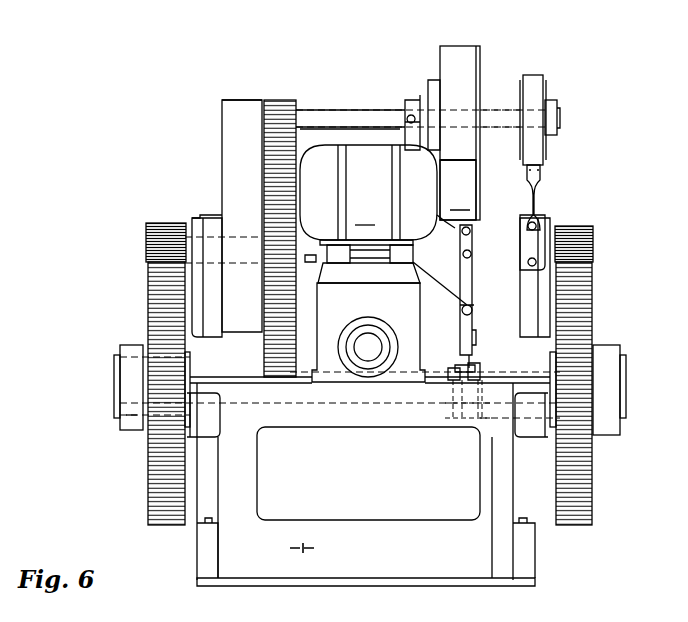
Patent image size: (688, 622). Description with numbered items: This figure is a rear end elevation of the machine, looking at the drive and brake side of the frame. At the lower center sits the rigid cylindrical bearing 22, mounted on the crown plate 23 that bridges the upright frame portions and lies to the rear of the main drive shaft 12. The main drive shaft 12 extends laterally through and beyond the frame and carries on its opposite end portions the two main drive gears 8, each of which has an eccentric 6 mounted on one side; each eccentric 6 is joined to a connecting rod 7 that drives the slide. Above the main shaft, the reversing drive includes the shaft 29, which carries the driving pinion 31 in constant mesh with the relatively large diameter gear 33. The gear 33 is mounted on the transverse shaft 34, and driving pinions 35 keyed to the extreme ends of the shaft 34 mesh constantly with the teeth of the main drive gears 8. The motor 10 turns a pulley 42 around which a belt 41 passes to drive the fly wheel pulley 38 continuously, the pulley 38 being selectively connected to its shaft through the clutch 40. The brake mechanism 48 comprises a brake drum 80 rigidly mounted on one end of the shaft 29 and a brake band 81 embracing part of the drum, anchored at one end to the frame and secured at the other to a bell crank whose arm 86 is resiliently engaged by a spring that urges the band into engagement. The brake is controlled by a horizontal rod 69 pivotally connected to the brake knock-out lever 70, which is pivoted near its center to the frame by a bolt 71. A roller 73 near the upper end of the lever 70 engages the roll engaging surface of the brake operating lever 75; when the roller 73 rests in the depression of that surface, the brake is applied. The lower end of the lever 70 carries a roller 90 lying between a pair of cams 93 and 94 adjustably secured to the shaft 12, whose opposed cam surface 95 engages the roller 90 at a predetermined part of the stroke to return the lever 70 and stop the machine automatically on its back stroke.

The eccentric 6 is at (114, 392).
The connecting rod 7 is at (607, 330).
The main drive gear 8 is at (150, 309).
The motor 10 is at (368, 192).
The main drive shaft 12 is at (301, 380).
The cylindrical bearing 22 is at (360, 335).
The crown plate 23 is at (402, 432).
The shaft 29 is at (348, 112).
The driving pinion 31 is at (277, 99).
The gear 33 is at (262, 160).
The shaft 34 is at (310, 265).
The driving pinion 35 is at (167, 222).
The fly wheel pulley 38 is at (436, 70).
The clutch 40 is at (430, 95).
The belt 41 is at (458, 147).
The pulley 42 is at (458, 190).
The brake mechanism 48 is at (544, 175).
The rod 69 is at (438, 218).
The brake knock-out lever 70 is at (462, 320).
The bolt 71 is at (462, 305).
The roller 73 is at (462, 250).
The brake operating lever 75 is at (462, 268).
The brake drum 80 is at (550, 95).
The brake band 81 is at (535, 70).
The arm 86 is at (525, 275).
The roller 90 is at (457, 365).
The cam 93 is at (470, 400).
The cam 94 is at (452, 380).
The cam surface 95 is at (482, 365).